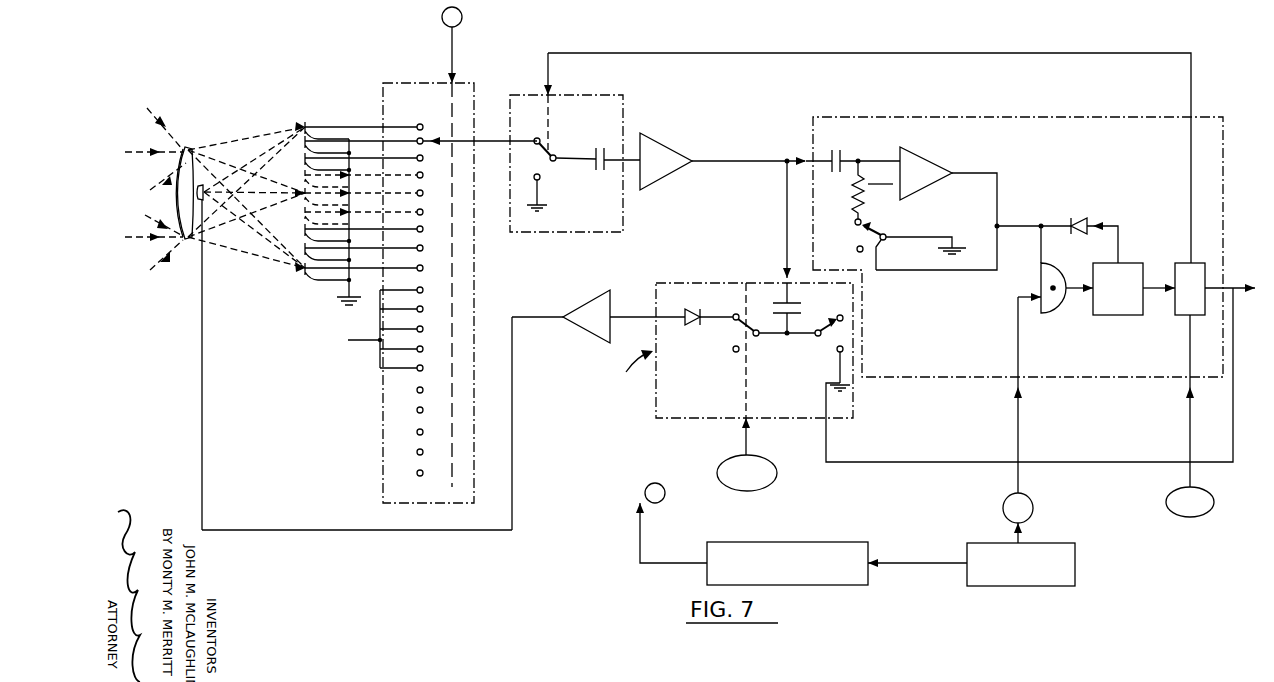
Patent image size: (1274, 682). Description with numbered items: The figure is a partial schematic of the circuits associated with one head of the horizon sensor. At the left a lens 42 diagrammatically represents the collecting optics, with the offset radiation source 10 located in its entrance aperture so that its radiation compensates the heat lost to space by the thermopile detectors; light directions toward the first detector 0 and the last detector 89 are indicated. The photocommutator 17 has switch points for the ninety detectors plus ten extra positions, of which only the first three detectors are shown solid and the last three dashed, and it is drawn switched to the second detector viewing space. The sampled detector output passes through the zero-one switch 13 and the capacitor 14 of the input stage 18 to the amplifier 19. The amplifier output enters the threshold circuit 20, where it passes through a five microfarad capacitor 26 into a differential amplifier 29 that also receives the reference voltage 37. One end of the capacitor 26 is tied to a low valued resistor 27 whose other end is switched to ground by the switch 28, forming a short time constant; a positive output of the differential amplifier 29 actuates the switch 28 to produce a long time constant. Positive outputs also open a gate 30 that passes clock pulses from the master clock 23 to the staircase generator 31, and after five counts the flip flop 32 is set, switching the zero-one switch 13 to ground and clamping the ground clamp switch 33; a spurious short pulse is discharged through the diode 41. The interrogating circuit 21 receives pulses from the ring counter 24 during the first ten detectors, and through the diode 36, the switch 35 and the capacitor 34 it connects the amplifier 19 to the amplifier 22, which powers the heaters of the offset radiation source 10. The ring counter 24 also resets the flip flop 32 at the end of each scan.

The lens 42 is at (190, 148).
The offset radiation source 10 is at (206, 182).
The detector 89 is at (160, 208).
The detector 0 is at (150, 185).
The photocommutator 17 is at (411, 80).
The input stage 18 is at (523, 95).
The 0-1 switch 13 is at (560, 149).
The capacitor 14 is at (595, 170).
The amplifier 19 is at (664, 140).
The threshold circuit 20 is at (1028, 116).
The 5 microfarad capacitor 26 is at (832, 174).
The low valued resistor 27 is at (852, 212).
The switch 28 is at (882, 219).
The reference voltage 37 is at (898, 192).
The differential amplifier 29 is at (933, 152).
The diode 41 is at (1078, 217).
The gate 30 is at (1050, 315).
The staircase generator 31 is at (1121, 317).
The flip flop 32 is at (1179, 317).
The interrogating circuit 21 is at (699, 283).
The amplifier 22 is at (580, 300).
The diode 36 is at (694, 310).
The switch 35 is at (749, 306).
The capacitor 34 is at (803, 316).
The ground clamp switch 33 is at (824, 338).
The ring counter 24 is at (855, 586).
The master clock 23 is at (1075, 586).